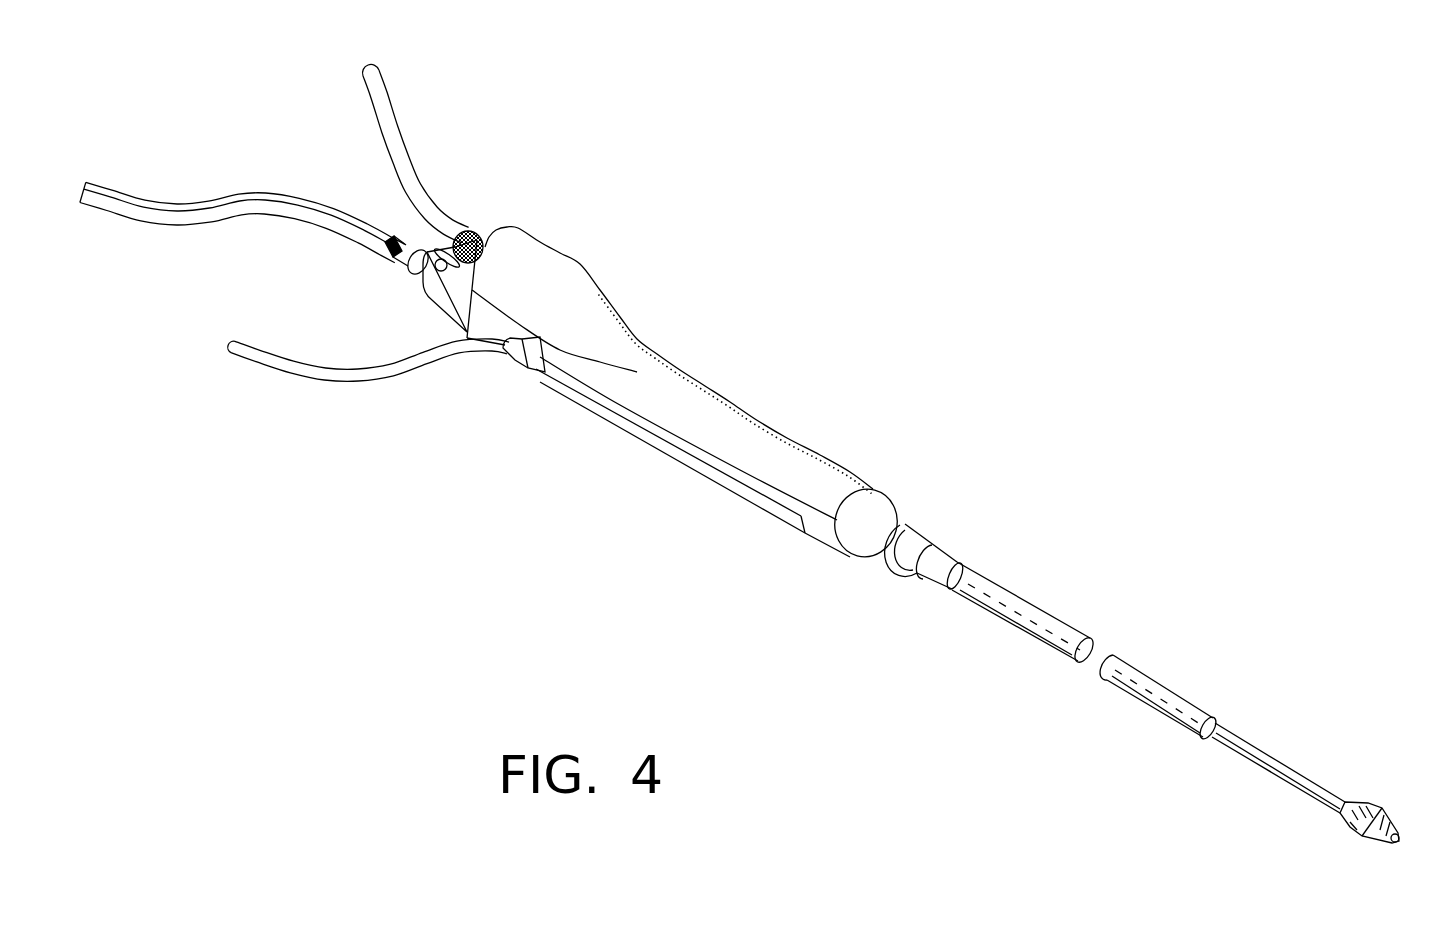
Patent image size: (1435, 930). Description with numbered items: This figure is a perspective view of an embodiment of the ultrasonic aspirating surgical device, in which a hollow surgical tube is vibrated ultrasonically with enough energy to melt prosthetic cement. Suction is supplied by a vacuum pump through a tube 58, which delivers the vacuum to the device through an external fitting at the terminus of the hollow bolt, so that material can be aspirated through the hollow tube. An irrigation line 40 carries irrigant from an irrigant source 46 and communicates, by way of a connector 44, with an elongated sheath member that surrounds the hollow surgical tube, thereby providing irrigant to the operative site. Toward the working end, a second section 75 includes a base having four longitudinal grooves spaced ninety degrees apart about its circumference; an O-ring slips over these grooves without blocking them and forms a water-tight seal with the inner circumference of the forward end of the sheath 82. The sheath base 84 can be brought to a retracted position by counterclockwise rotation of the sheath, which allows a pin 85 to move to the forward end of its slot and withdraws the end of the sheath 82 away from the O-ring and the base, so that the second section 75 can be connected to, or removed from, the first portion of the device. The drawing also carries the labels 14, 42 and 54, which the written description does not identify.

The distal tip 14 is at (1382, 812).
The irrigation line 40 is at (733, 477).
The tube 42 is at (407, 139).
The connector 44 is at (803, 530).
The irrigant source 46 is at (234, 345).
The valve connector 54 is at (385, 233).
The tube 58 is at (177, 200).
The second section 75 is at (1257, 757).
The sheath 82 is at (1047, 627).
The sheath base 84 is at (927, 537).
The pin 85 is at (903, 525).